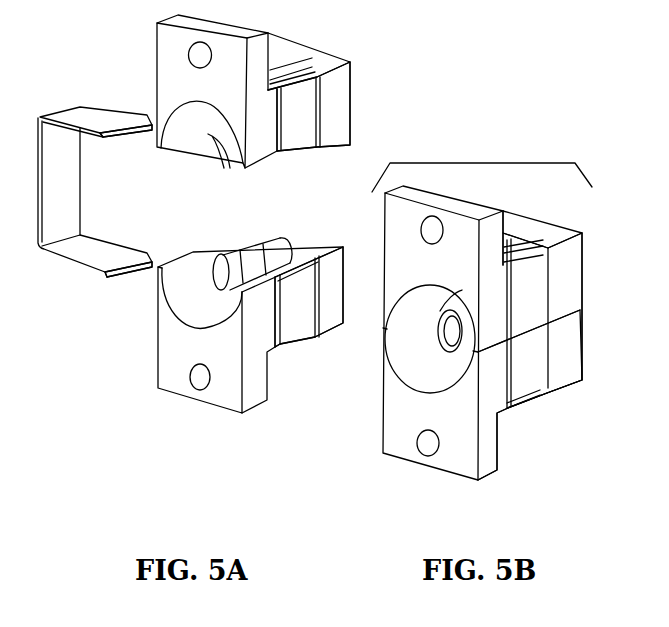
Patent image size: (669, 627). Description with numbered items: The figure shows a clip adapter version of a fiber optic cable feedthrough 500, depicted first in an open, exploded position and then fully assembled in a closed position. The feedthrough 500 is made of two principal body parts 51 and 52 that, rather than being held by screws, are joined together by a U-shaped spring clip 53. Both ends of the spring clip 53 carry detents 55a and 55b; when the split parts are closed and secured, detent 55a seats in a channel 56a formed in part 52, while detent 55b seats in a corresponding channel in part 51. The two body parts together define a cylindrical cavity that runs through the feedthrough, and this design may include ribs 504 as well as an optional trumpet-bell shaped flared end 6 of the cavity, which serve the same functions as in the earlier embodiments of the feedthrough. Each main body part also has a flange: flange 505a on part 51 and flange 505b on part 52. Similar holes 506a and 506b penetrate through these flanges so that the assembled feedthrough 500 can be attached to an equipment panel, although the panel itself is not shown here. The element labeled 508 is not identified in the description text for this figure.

In FIG. 5A, the spring clip 53 is at (97, 108).
In FIG. 5A, the detent 55a is at (105, 140).
In FIG. 5A, the detent 55b is at (106, 273).
In FIG. 5A, the principal part 52 is at (265, 168).
In FIG. 5A, the flange 505b is at (270, 40).
In FIG. 5B, the flange 505b is at (513, 218).
In FIG. 5A, the channel 56a is at (293, 74).
In FIG. 5A, the ribs 504 is at (278, 228).
In FIG. 5A, the principal part 51 is at (213, 317).
In FIG. 5A, the flange 505a is at (268, 378).
In FIG. 5B, the flange 505a is at (499, 434).
In FIG. 5A, the hole 506a is at (192, 372).
In FIG. 5B, the hole 506a is at (420, 451).
In FIG. 5B, the hole 506b is at (440, 221).
In FIG. 5B, the fiber optic cable feedthrough 500 is at (502, 163).
In FIG. 5B, the trumpet-bell shaped flared end 6 is at (410, 353).
In FIG. 5B, the inner passage 508 is at (437, 340).